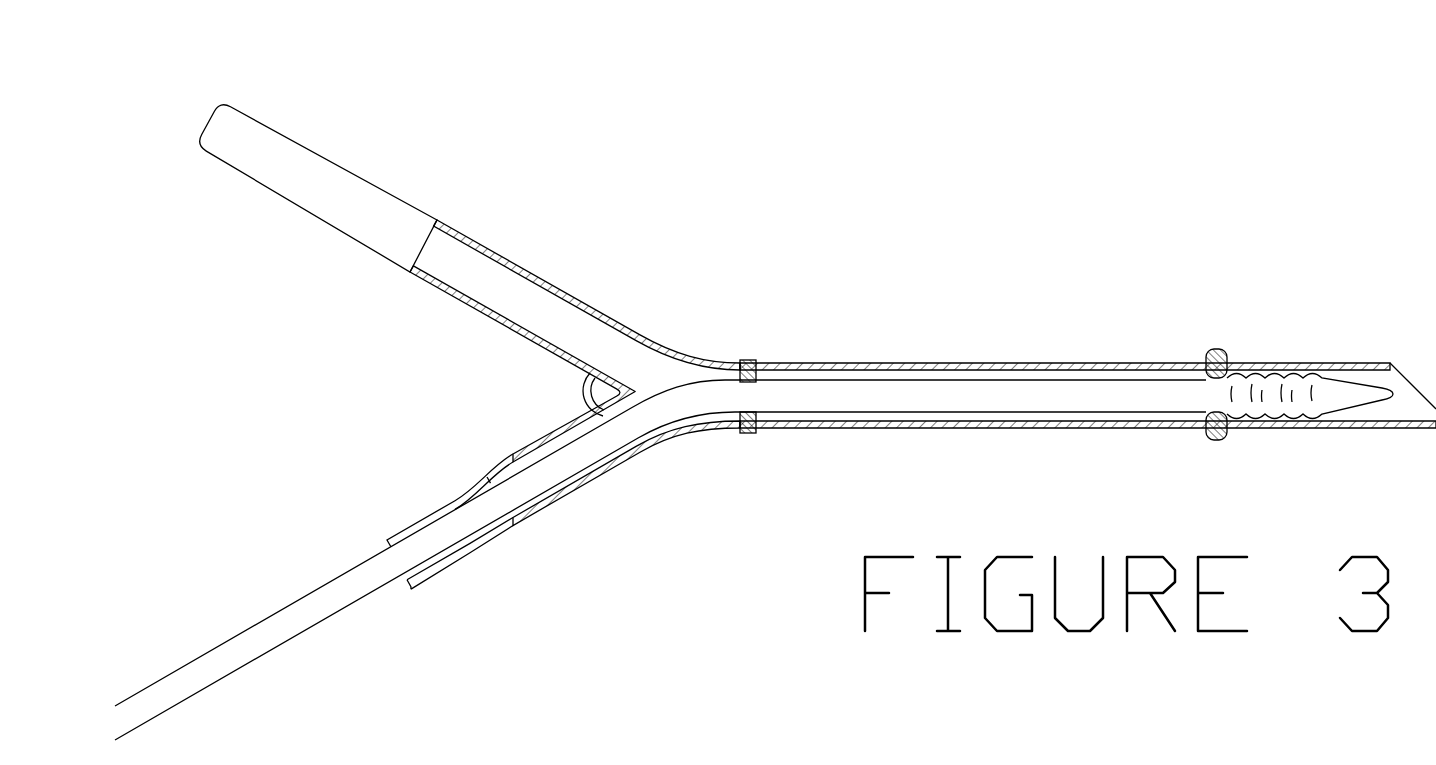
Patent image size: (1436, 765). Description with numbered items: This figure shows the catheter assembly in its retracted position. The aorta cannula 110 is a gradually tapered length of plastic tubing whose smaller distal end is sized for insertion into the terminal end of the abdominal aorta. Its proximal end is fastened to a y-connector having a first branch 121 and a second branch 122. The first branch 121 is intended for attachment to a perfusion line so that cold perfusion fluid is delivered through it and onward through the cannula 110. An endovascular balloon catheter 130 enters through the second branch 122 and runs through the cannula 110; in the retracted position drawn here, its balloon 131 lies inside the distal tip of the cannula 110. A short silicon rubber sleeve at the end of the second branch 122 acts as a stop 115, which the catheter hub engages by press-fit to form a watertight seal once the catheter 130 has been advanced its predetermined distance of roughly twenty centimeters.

The aorta cannula 110 is at (912, 353).
The stop 115 is at (425, 507).
The first branch 121 is at (517, 257).
The second branch 122 is at (600, 487).
The endovascular balloon catheter 130 is at (292, 630).
The balloon 131 is at (1288, 397).